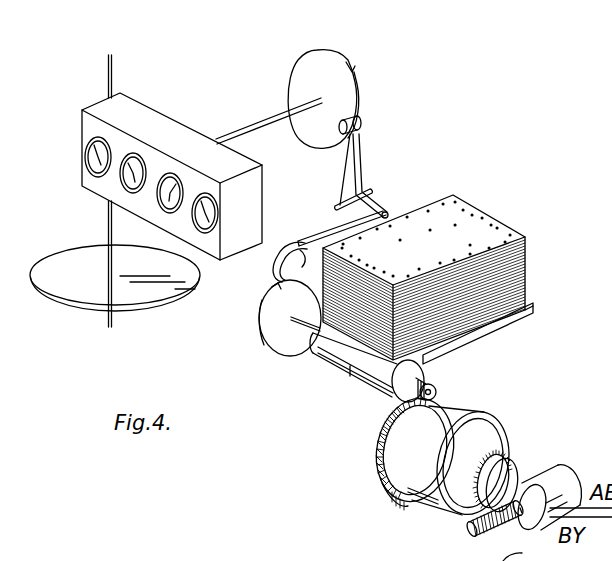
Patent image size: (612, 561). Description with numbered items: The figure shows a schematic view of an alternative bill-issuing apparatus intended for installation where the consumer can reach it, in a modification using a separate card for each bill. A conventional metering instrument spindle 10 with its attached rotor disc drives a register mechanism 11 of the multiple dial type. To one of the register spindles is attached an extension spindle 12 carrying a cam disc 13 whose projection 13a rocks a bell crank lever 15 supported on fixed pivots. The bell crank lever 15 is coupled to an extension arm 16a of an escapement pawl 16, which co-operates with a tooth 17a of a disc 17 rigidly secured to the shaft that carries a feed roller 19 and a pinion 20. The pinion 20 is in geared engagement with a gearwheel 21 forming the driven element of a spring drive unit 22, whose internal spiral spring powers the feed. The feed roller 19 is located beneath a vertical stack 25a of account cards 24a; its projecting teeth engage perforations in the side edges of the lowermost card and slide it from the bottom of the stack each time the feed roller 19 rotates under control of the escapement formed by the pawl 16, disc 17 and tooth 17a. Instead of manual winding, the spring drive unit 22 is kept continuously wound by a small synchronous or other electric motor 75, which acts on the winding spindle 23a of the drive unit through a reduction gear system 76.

The metering instrument spindle 10 is at (110, 223).
The register mechanism 11 is at (173, 128).
The extension spindle 12 is at (255, 120).
The cam disc 13 is at (300, 60).
The projection 13a is at (353, 70).
The bell crank lever 15 is at (360, 153).
The escapement pawl 16 is at (292, 240).
The extension arm 16a is at (320, 232).
The disc 17 is at (275, 338).
The tooth 17a is at (278, 283).
The feed roller 19 is at (352, 373).
The pinion 20 is at (438, 385).
The gearwheel 21 is at (382, 450).
The spring drive unit 22 is at (480, 440).
The winding spindle 23a is at (498, 450).
The account cards 24a is at (493, 330).
The vertical stack 25a is at (463, 222).
The electric motor 75 is at (558, 482).
The reduction gear system 76 is at (487, 510).